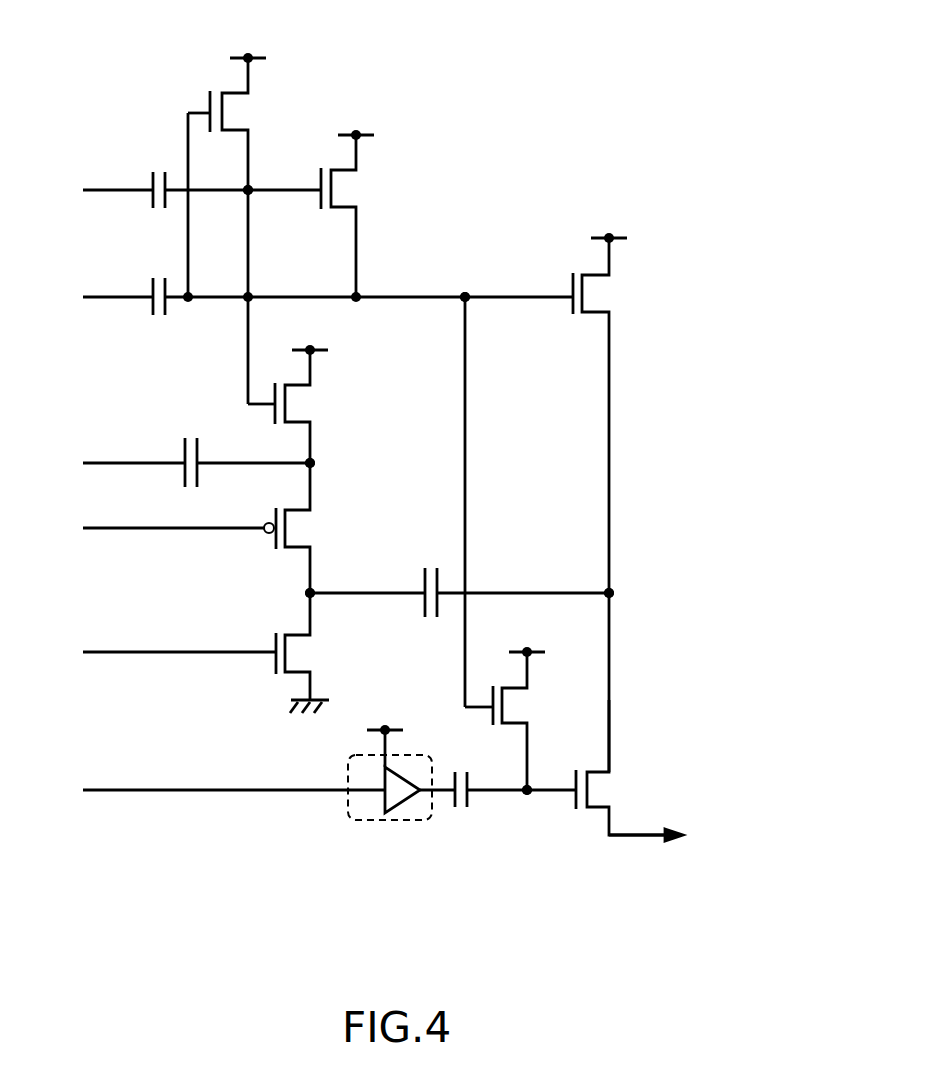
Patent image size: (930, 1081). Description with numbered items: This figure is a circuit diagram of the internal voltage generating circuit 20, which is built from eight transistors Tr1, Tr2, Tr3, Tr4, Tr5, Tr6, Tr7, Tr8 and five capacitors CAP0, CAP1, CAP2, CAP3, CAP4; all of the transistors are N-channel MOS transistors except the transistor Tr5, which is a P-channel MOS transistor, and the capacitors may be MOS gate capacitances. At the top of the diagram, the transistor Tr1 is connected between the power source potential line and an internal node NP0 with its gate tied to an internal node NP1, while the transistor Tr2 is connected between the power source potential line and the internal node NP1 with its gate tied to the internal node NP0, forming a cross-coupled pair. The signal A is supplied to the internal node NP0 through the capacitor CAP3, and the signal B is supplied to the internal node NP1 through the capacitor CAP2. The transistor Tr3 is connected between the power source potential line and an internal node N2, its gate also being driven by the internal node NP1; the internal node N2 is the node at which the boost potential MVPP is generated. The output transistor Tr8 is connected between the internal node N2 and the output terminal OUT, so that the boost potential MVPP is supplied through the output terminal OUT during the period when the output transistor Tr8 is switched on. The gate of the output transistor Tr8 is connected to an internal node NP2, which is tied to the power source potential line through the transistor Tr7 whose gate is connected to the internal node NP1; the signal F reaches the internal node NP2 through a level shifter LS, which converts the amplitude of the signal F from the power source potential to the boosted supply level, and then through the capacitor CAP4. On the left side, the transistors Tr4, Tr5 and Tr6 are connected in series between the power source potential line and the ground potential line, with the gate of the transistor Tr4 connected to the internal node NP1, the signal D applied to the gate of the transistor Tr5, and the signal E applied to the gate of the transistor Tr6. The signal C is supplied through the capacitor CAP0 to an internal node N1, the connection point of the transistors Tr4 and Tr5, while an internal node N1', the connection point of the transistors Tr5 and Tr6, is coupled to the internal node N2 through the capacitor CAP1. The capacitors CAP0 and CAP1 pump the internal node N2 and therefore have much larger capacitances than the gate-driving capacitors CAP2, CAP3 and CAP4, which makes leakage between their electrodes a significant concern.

The internal voltage generating circuit 20 is at (639, 35).
The transistor Tr1 is at (237, 92).
The transistor Tr2 is at (350, 201).
The transistor Tr3 is at (600, 307).
The transistor Tr4 is at (300, 420).
The transistor Tr5 is at (300, 545).
The transistor Tr6 is at (300, 670).
The transistor Tr7 is at (520, 720).
The output transistor Tr8 is at (600, 809).
The capacitor CAP0 is at (182, 447).
The capacitor CAP1 is at (423, 582).
The capacitor CAP2 is at (150, 290).
The capacitor CAP3 is at (150, 183).
The capacitor CAP4 is at (455, 774).
The level shifter LS is at (395, 822).
The internal node NP0 is at (248, 195).
The internal node NP1 is at (465, 292).
The internal node NP2 is at (527, 796).
The internal node N1 is at (353, 464).
The internal node N1' is at (272, 591).
The internal node N2 is at (618, 592).
The boost potential MVPP is at (652, 737).
The output terminal OUT is at (650, 837).